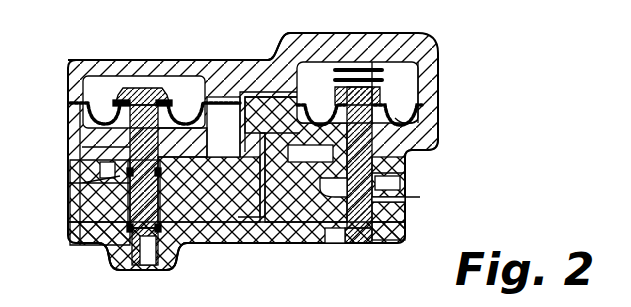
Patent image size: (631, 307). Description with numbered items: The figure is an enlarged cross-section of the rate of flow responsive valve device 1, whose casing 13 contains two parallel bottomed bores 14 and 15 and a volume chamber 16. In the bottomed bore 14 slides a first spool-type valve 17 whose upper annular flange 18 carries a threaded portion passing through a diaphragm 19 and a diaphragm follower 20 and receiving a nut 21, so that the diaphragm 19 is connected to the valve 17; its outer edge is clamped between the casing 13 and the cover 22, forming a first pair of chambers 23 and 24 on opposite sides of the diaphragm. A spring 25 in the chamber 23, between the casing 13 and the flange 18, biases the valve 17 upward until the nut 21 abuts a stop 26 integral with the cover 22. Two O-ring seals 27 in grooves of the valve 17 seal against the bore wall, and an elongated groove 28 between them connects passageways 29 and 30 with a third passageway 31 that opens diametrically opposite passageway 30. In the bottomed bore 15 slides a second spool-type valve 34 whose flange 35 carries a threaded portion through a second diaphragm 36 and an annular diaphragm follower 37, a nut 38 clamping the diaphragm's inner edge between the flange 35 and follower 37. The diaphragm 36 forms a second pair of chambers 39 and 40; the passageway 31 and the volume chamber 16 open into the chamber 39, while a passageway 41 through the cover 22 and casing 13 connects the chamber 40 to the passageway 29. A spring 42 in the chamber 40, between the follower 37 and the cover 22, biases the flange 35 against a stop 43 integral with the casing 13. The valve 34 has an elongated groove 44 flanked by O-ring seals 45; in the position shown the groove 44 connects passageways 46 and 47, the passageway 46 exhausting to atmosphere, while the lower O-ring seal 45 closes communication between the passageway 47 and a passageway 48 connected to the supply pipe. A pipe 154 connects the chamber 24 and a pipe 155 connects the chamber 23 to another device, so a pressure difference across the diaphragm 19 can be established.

The rate of flow responsive valve device 1 is at (446, 63).
The casing 13 is at (98, 245).
The bottomed bore 14 is at (156, 245).
The bottomed bore 15 is at (373, 244).
The volume chamber 16 is at (307, 163).
The first spool-type valve 17 is at (150, 230).
The annular flange 18 is at (76, 107).
The diaphragm 19 is at (184, 112).
The diaphragm follower 20 is at (162, 100).
The nut 21 is at (122, 100).
The cover 22 is at (240, 66).
The chamber 23 is at (195, 135).
The chamber 24 is at (205, 78).
The spring 25 is at (80, 147).
The stop 26 is at (142, 88).
The O-ring seal 27 is at (162, 172).
The elongated peripheral annular groove 28 is at (165, 197).
The passageway 29 is at (75, 184).
The passageway 30 is at (75, 222).
The third passageway 31 is at (228, 217).
The second spool-type valve 34 is at (354, 232).
The annular flange 35 is at (430, 112).
The second diaphragm 36 is at (319, 112).
The annular diaphragm follower 37 is at (432, 98).
The nut 38 is at (383, 93).
The chamber 39 is at (432, 150).
The chamber 40 is at (430, 76).
The passageway 41 is at (275, 92).
The spring 42 is at (378, 62).
The stop 43 is at (432, 128).
The elongated peripheral annular groove 44 is at (398, 185).
The O-ring seal 45 is at (405, 160).
The passageway 46 is at (325, 196).
The passageway 47 is at (404, 204).
The passageway 48 is at (323, 225).
The pipe 154 is at (68, 93).
The pipe 155 is at (68, 137).